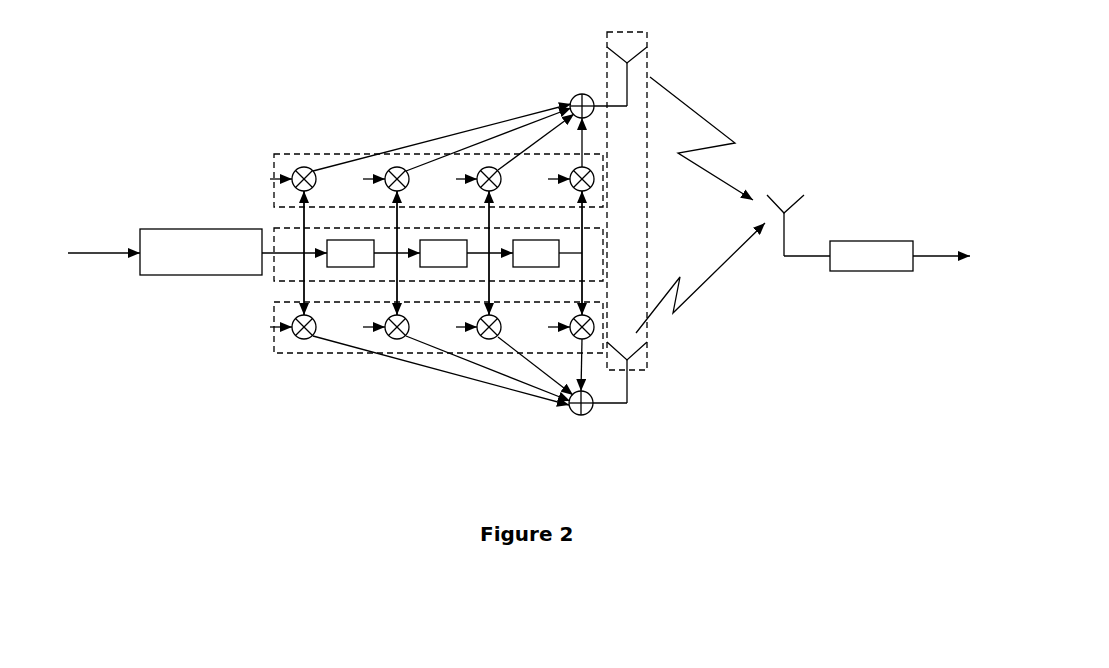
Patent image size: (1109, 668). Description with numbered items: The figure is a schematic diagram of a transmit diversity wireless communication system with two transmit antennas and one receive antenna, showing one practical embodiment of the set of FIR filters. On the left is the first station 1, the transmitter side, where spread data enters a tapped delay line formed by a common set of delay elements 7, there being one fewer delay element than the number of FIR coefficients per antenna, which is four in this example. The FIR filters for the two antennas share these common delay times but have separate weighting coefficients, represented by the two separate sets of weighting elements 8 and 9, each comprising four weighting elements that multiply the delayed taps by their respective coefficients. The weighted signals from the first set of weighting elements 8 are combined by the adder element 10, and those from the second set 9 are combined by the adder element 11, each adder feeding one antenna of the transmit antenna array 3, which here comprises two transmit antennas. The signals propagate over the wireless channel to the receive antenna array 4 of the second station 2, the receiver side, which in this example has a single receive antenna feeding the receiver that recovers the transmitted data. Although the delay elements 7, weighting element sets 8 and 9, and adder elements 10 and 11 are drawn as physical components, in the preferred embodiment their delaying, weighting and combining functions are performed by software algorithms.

The first station 1 is at (228, 321).
The second station 2 is at (856, 273).
The transmit antenna array 3 is at (652, 48).
The receive antenna array 4 is at (786, 224).
The delay elements 7 is at (276, 228).
The first set of weighting coefficient elements 8 is at (276, 154).
The second set of weighting coefficient elements 9 is at (320, 356).
The first adder element 10 is at (578, 96).
The second adder element 11 is at (570, 414).